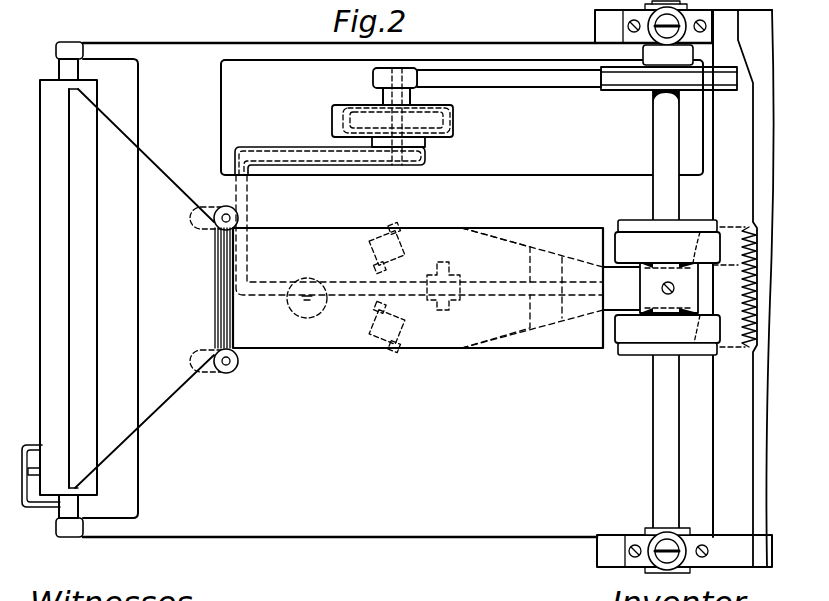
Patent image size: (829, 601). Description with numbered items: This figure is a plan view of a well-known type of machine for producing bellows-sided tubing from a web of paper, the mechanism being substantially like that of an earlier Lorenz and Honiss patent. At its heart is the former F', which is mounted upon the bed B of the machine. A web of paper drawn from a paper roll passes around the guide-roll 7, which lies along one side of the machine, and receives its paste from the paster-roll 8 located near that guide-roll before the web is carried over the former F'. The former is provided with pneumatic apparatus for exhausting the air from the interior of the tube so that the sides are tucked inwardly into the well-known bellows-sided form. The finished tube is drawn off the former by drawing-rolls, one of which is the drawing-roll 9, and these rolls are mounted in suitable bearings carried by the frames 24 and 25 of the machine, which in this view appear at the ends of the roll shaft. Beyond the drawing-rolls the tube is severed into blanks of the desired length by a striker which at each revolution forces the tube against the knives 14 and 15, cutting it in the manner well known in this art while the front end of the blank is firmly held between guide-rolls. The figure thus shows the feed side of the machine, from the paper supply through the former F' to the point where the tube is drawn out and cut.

The guide-roll 7 is at (53, 357).
The paster-roll 8 is at (33, 470).
The drawing-roll 9 is at (667, 287).
The knife 14 is at (753, 250).
The knife 15 is at (743, 288).
The frame 24 is at (623, 558).
The frame 25 is at (612, 23).
The former F' is at (357, 288).
The bed B is at (397, 290).